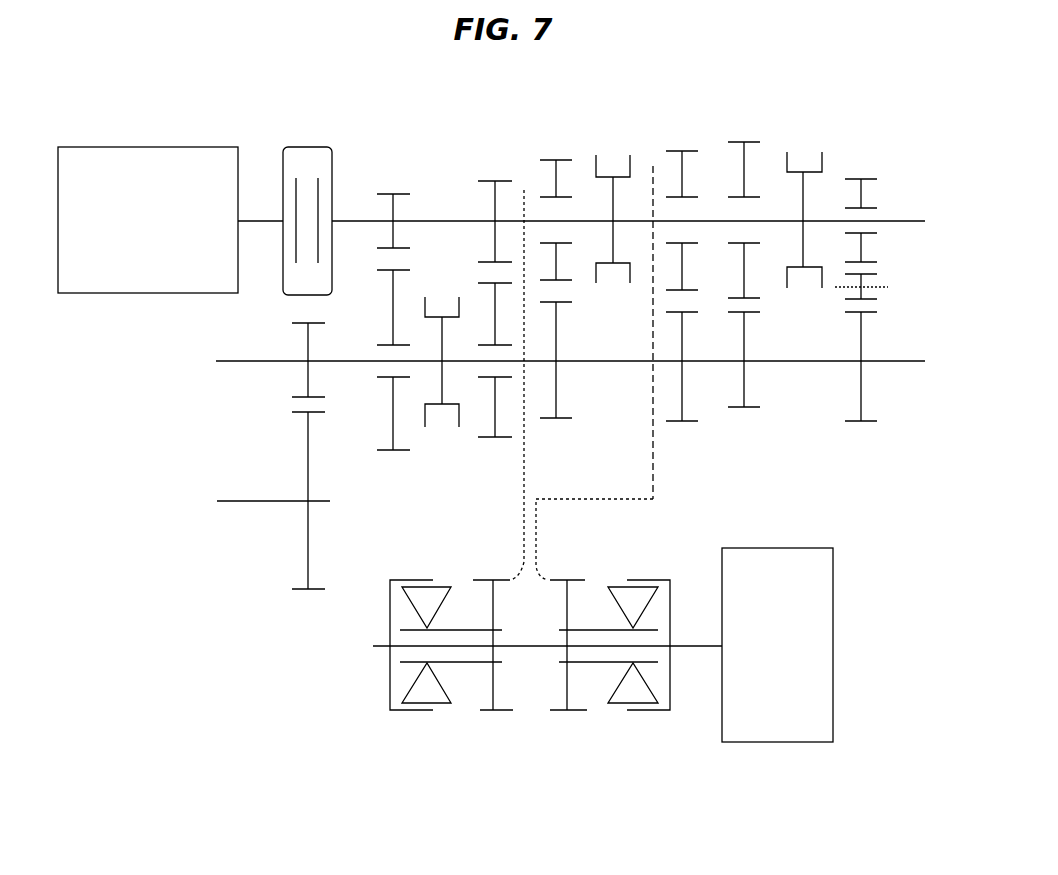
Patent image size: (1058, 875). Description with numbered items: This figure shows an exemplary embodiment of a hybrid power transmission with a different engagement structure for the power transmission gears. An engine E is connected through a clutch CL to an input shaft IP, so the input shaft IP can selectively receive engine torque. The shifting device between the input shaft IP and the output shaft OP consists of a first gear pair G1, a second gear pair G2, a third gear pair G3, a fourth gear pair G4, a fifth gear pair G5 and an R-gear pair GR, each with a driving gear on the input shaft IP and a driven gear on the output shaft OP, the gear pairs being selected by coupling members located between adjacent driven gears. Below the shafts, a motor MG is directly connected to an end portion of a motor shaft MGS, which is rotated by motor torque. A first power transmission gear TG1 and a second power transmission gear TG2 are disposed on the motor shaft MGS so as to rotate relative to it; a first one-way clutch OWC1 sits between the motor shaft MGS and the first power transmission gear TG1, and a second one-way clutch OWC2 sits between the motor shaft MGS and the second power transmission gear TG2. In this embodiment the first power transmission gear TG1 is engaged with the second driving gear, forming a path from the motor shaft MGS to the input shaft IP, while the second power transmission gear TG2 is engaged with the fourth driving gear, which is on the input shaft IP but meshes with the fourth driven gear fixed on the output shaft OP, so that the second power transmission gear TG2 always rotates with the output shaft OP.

The engine E is at (148, 220).
The clutch CL is at (306, 146).
The input shaft IP is at (904, 221).
The output shaft OP is at (903, 361).
The first gear pair G1 is at (393, 310).
The second gear pair G2 is at (524, 190).
The third gear pair G3 is at (556, 277).
The fourth gear pair G4 is at (653, 166).
The fifth gear pair G5 is at (744, 263).
The R-gear pair GR is at (861, 288).
The motor shaft MGS is at (687, 646).
The first power transmission gear TG1 is at (500, 712).
The second power transmission gear TG2 is at (573, 712).
The first one-way clutch OWC1 is at (440, 705).
The second one-way clutch OWC2 is at (623, 705).
The motor MG is at (777, 645).